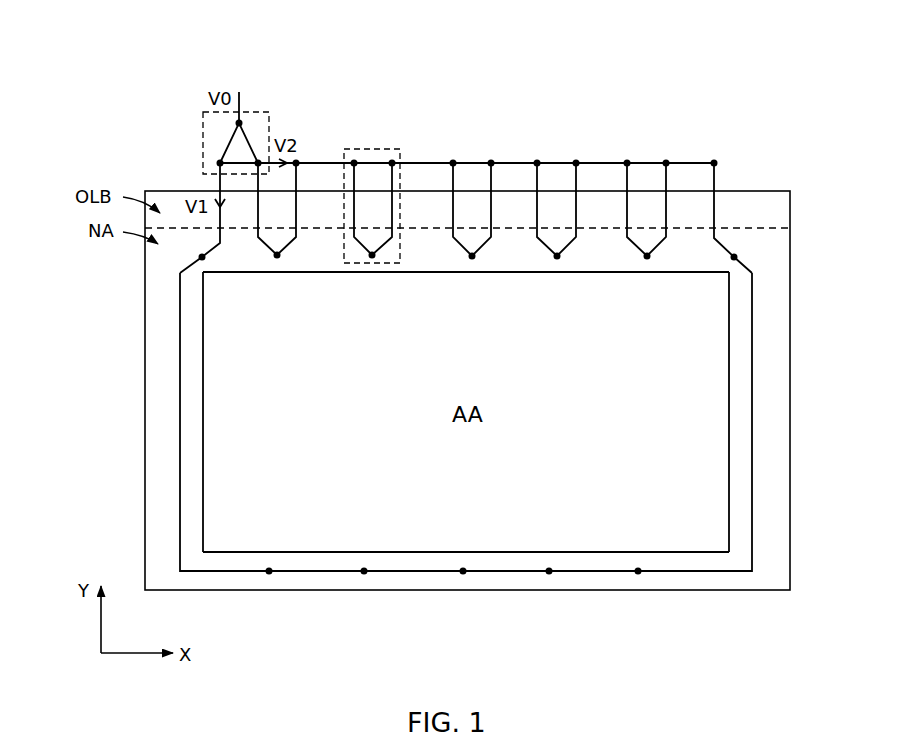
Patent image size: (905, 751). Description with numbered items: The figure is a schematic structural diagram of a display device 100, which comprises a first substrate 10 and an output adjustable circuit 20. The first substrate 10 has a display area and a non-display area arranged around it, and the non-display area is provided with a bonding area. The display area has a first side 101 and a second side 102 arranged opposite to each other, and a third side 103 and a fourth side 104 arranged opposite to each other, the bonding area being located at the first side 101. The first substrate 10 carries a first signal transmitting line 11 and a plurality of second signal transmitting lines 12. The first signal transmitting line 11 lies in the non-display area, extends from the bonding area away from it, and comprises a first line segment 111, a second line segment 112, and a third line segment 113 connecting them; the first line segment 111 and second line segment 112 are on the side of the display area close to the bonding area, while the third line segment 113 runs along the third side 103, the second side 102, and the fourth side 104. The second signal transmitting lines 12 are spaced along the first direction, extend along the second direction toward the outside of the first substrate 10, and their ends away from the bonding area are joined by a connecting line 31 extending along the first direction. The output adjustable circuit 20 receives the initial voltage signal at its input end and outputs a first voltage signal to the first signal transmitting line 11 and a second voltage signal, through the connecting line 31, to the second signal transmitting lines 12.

The display device 100 is at (167, 60).
The first substrate 10 is at (145, 348).
The first signal transmitting line 11 is at (414, 350).
The first line segment 111 is at (182, 268).
The second line segment 112 is at (726, 250).
The third line segment 113 is at (180, 300).
The first side 101 is at (694, 276).
The second side 102 is at (719, 554).
The third side 103 is at (732, 418).
The fourth side 104 is at (201, 415).
The second signal transmitting line 12 is at (352, 148).
The output adjustable circuit 20 is at (201, 163).
The connecting line 31 is at (427, 160).